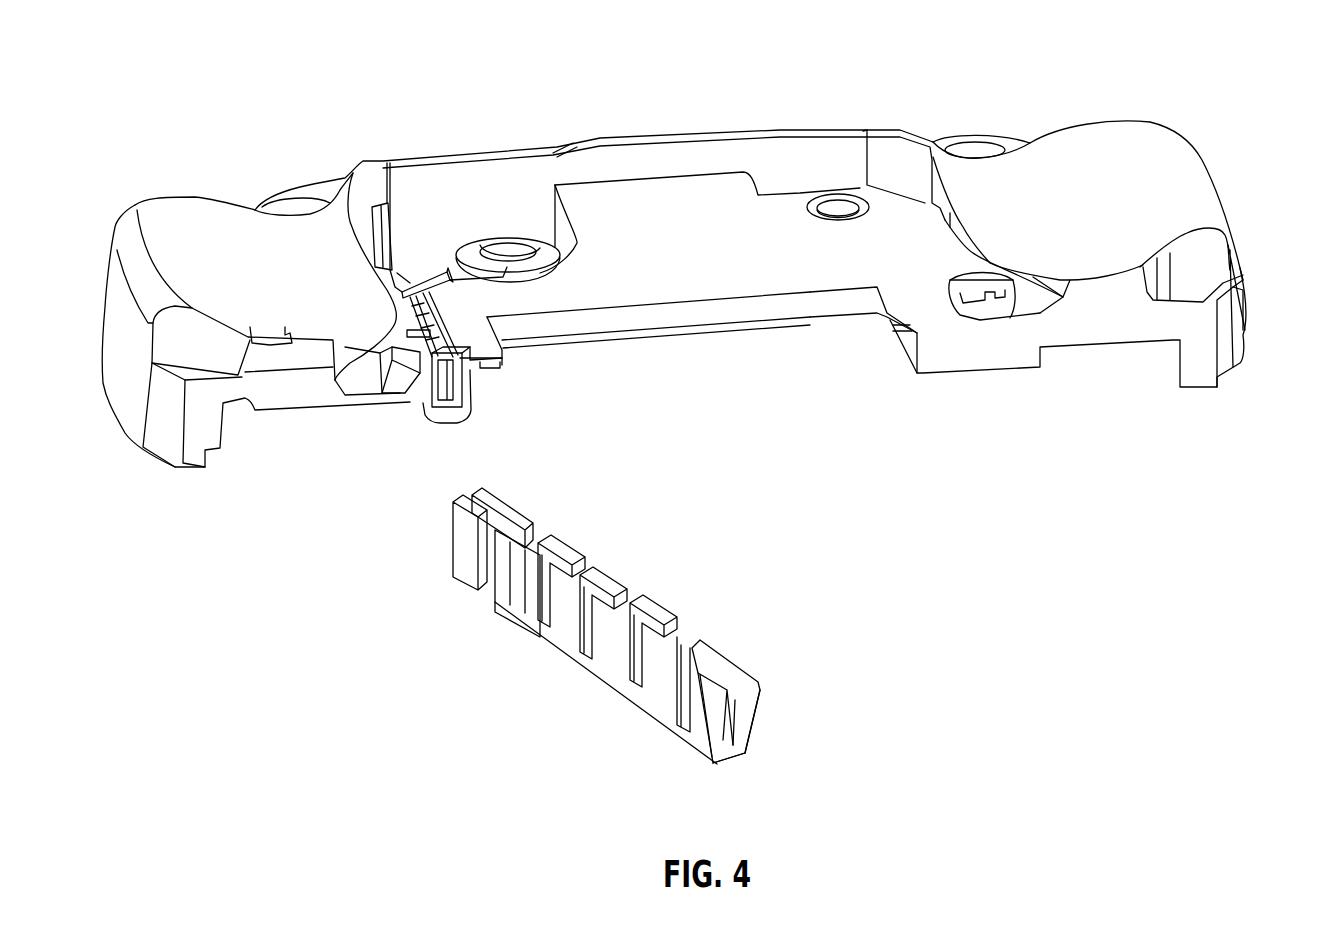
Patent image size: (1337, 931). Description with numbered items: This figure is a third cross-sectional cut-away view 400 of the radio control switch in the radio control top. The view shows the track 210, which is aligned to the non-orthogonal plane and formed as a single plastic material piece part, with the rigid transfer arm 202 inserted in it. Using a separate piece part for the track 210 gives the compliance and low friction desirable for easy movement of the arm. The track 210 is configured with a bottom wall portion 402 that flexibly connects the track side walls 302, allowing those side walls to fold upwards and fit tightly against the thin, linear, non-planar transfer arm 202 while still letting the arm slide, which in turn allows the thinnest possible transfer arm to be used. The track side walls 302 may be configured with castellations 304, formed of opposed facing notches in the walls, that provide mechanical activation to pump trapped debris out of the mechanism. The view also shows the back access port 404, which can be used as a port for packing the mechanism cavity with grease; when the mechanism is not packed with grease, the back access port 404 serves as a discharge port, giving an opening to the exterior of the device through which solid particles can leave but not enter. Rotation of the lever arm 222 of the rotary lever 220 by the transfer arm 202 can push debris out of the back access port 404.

The third cross-sectional cut-away view 400 is at (1258, 72).
The back access port 404 is at (382, 210).
The lever arm 222 is at (432, 273).
The rotary lever 220 is at (529, 240).
The transfer arm 202 is at (430, 332).
The track side walls 302 is at (467, 385).
The bottom wall portion 402 is at (450, 418).
The track 210 is at (440, 372).
The castellations 304 is at (637, 603).